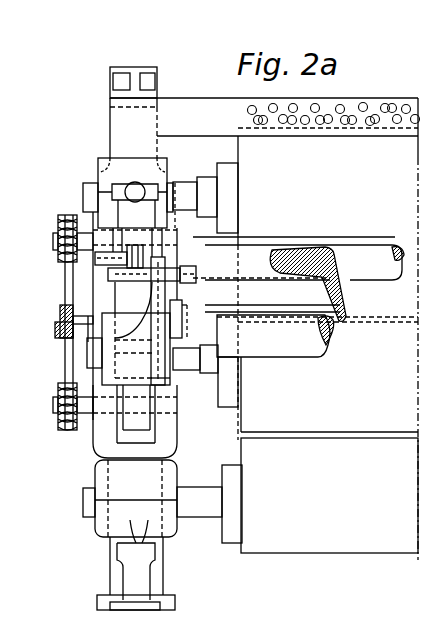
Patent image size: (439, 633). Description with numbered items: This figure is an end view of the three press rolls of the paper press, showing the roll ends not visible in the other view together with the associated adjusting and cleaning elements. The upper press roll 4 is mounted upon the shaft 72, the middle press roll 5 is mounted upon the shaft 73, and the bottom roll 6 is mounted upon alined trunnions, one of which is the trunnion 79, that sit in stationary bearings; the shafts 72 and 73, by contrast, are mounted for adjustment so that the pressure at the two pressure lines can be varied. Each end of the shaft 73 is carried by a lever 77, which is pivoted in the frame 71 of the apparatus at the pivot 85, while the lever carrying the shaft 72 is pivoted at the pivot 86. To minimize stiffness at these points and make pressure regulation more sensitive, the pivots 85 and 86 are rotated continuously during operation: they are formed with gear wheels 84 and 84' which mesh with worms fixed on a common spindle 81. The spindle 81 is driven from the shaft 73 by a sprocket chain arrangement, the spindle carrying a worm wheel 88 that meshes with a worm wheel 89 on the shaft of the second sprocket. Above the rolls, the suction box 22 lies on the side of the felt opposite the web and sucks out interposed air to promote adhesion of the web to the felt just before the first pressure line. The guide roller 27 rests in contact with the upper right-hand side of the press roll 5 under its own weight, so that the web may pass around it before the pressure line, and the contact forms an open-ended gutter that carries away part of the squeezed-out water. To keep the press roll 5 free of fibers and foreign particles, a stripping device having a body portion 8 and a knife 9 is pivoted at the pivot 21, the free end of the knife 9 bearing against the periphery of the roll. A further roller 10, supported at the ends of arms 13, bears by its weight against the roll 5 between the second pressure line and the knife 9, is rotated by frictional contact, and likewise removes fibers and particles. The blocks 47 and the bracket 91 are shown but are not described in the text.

The upper press roll 4 is at (305, 329).
The middle press roll 5 is at (317, 374).
The bottom roll 6 is at (329, 495).
The body portion 8 is at (297, 278).
The knife 9 is at (343, 318).
The roller 10 is at (275, 337).
The arms 13 is at (182, 313).
The pivot 21 is at (110, 275).
The suction box 22 is at (265, 117).
The guide roller 27 is at (381, 260).
The bearing block 47 is at (228, 170).
The frame 71 is at (130, 338).
The shaft 72 is at (180, 190).
The shaft 73 is at (187, 362).
The lever 77 is at (130, 420).
The trunnion 79 is at (209, 504).
The spindle 81 is at (65, 290).
The gear wheel 84 is at (47, 406).
The gear wheel 84' is at (47, 238).
The pivot 85 is at (83, 405).
The pivot 86 is at (87, 237).
The worm wheel 88 is at (58, 331).
The worm wheel 89 is at (60, 311).
The bracket 91 is at (88, 324).